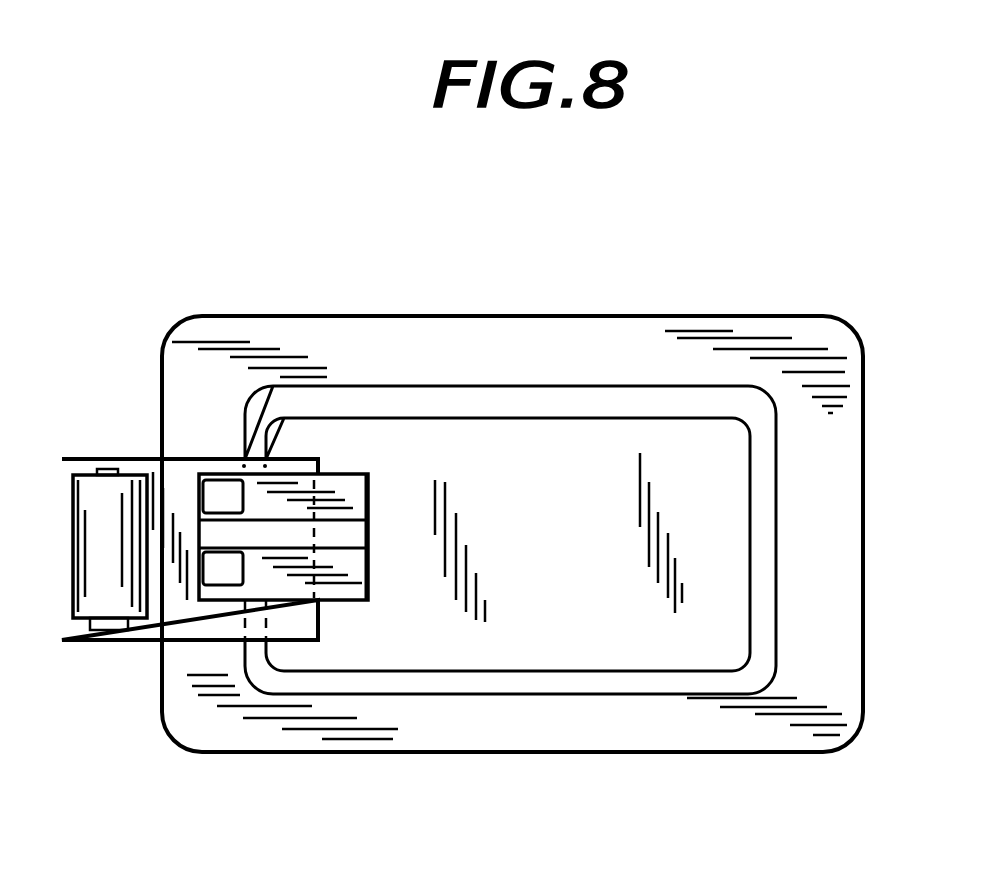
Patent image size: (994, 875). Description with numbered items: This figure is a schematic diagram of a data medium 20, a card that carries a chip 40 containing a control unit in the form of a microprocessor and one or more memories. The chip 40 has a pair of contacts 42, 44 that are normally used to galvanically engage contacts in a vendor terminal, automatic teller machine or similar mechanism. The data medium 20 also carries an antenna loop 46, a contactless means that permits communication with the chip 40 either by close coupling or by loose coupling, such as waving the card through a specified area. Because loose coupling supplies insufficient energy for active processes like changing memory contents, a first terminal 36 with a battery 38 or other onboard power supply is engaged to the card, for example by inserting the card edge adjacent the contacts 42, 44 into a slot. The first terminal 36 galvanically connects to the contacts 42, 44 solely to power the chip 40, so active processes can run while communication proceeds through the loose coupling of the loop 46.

The data medium 20 is at (848, 378).
The first terminal 36 is at (68, 462).
The battery 38 is at (103, 592).
The chip 40 is at (292, 578).
The contact 42 is at (222, 487).
The contact 44 is at (233, 562).
The antenna loop 46 is at (765, 580).